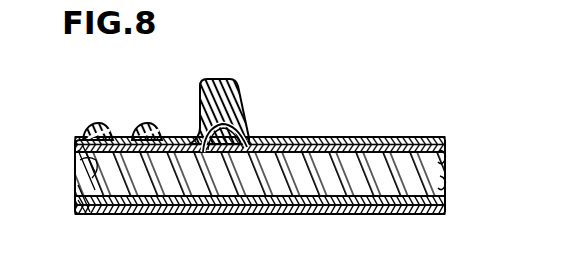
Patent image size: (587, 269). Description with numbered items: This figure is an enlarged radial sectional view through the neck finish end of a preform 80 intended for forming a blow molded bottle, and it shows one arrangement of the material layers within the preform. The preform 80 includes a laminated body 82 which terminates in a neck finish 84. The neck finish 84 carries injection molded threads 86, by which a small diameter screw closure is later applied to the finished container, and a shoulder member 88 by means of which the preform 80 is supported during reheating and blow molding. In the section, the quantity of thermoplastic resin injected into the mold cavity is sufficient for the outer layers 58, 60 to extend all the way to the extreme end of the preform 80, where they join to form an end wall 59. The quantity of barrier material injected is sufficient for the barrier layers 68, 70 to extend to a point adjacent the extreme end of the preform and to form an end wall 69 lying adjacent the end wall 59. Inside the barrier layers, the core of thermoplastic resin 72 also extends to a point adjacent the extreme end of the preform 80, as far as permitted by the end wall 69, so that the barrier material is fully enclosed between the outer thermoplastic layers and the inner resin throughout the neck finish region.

The thermoplastic resin layer 58 is at (387, 213).
The end wall 59 is at (80, 174).
The thermoplastic resin layer 60 is at (432, 137).
The barrier material layer 68 is at (443, 180).
The end wall 69 is at (110, 214).
The barrier material layer 70 is at (447, 157).
The thermoplastic resin 72 is at (333, 186).
The preform 80 is at (389, 124).
The laminated body 82 is at (336, 136).
The neck finish 84 is at (180, 112).
The injection molded threads 86 is at (157, 126).
The shoulder member 88 is at (236, 96).